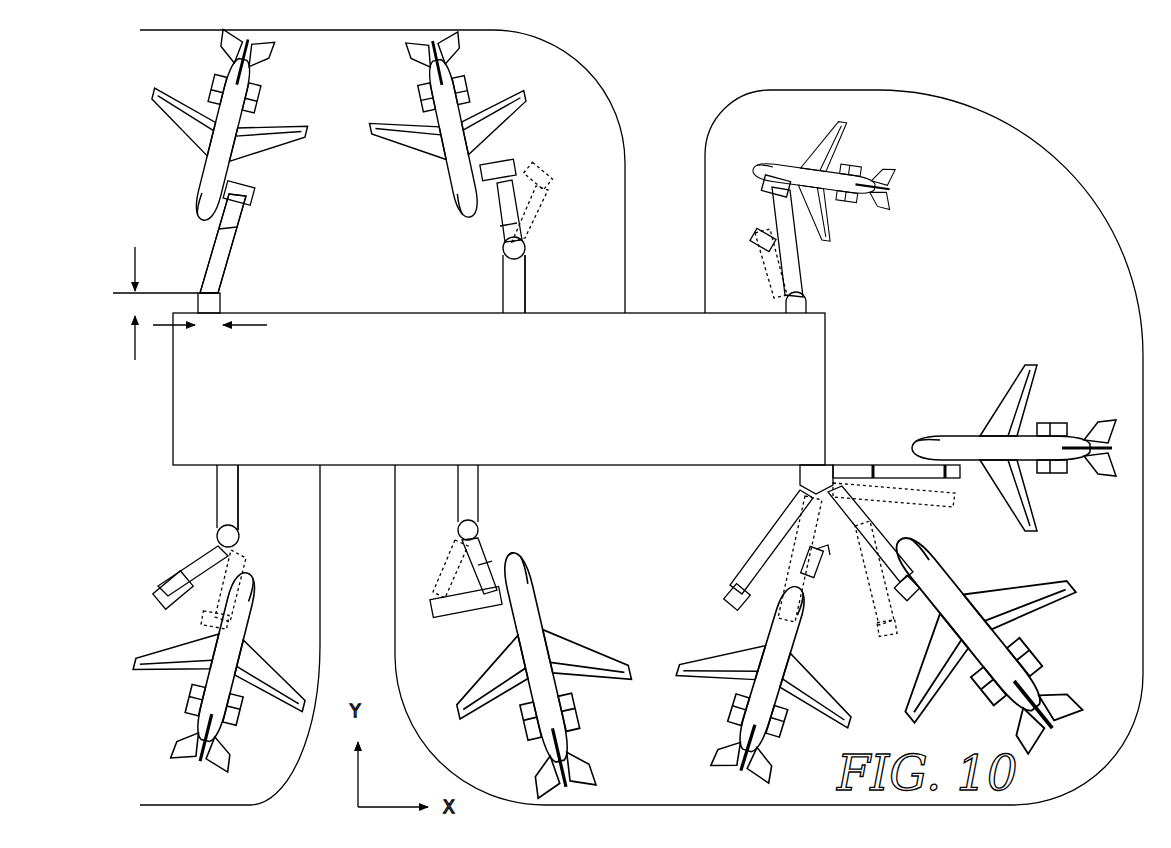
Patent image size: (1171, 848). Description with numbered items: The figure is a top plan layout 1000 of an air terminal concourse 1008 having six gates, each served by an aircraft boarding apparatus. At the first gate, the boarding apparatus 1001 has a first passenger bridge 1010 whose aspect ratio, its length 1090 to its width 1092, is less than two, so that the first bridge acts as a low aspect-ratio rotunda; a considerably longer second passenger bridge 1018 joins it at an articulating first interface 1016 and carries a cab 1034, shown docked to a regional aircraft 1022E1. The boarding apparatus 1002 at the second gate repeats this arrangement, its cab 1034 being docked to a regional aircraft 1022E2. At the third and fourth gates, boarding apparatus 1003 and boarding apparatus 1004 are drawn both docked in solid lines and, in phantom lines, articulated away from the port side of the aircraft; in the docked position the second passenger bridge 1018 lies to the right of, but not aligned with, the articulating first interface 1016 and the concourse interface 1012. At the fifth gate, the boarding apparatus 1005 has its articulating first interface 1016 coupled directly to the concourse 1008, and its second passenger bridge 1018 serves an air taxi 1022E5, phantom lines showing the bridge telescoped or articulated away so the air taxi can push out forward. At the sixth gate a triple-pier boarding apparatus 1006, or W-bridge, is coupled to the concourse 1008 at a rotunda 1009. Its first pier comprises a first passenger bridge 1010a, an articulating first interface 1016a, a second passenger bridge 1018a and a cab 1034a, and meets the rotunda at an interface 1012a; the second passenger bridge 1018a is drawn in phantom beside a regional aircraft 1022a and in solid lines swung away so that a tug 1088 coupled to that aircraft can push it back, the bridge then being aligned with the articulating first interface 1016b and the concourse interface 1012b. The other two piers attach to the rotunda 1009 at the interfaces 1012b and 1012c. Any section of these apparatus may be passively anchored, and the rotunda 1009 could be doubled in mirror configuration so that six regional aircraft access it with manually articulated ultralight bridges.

The plan layout 1000 is at (984, 90).
The aircraft boarding apparatus embodiment 1001 is at (231, 267).
The aircraft boarding apparatus embodiment 1002 is at (244, 540).
The aircraft boarding apparatus embodiment 1003 is at (524, 222).
The aircraft boarding apparatus embodiment 1004 is at (461, 563).
The aircraft boarding apparatus embodiment 1005 is at (776, 269).
The triple-pier aircraft boarding apparatus embodiment 1006 is at (816, 520).
The concourse 1008 is at (394, 390).
The rotunda 1009 is at (828, 464).
The first passenger bridge 1010 is at (220, 300).
The first passenger bridge 1010a is at (797, 510).
The concourse interface 1012 is at (527, 308).
The track 1012a is at (800, 497).
The concourse interface 1012b is at (845, 486).
The interface 1012c is at (833, 464).
The articulating first interface 1016 is at (203, 290).
The articulating first interface 1016a is at (787, 542).
The articulating first interface 1016b is at (857, 520).
The second passenger bridge 1018 is at (245, 230).
The second passenger bridge 1018a is at (750, 570).
The regional aircraft 1022E1 is at (198, 182).
The regional aircraft 1022E2 is at (188, 708).
The air taxi 1022E5 is at (887, 187).
The regional aircraft 1022a is at (737, 743).
The cab 1034 is at (250, 195).
The cab 1034a is at (727, 600).
The tug 1088 is at (828, 578).
The length 1090 is at (150, 303).
The width 1092 is at (207, 330).